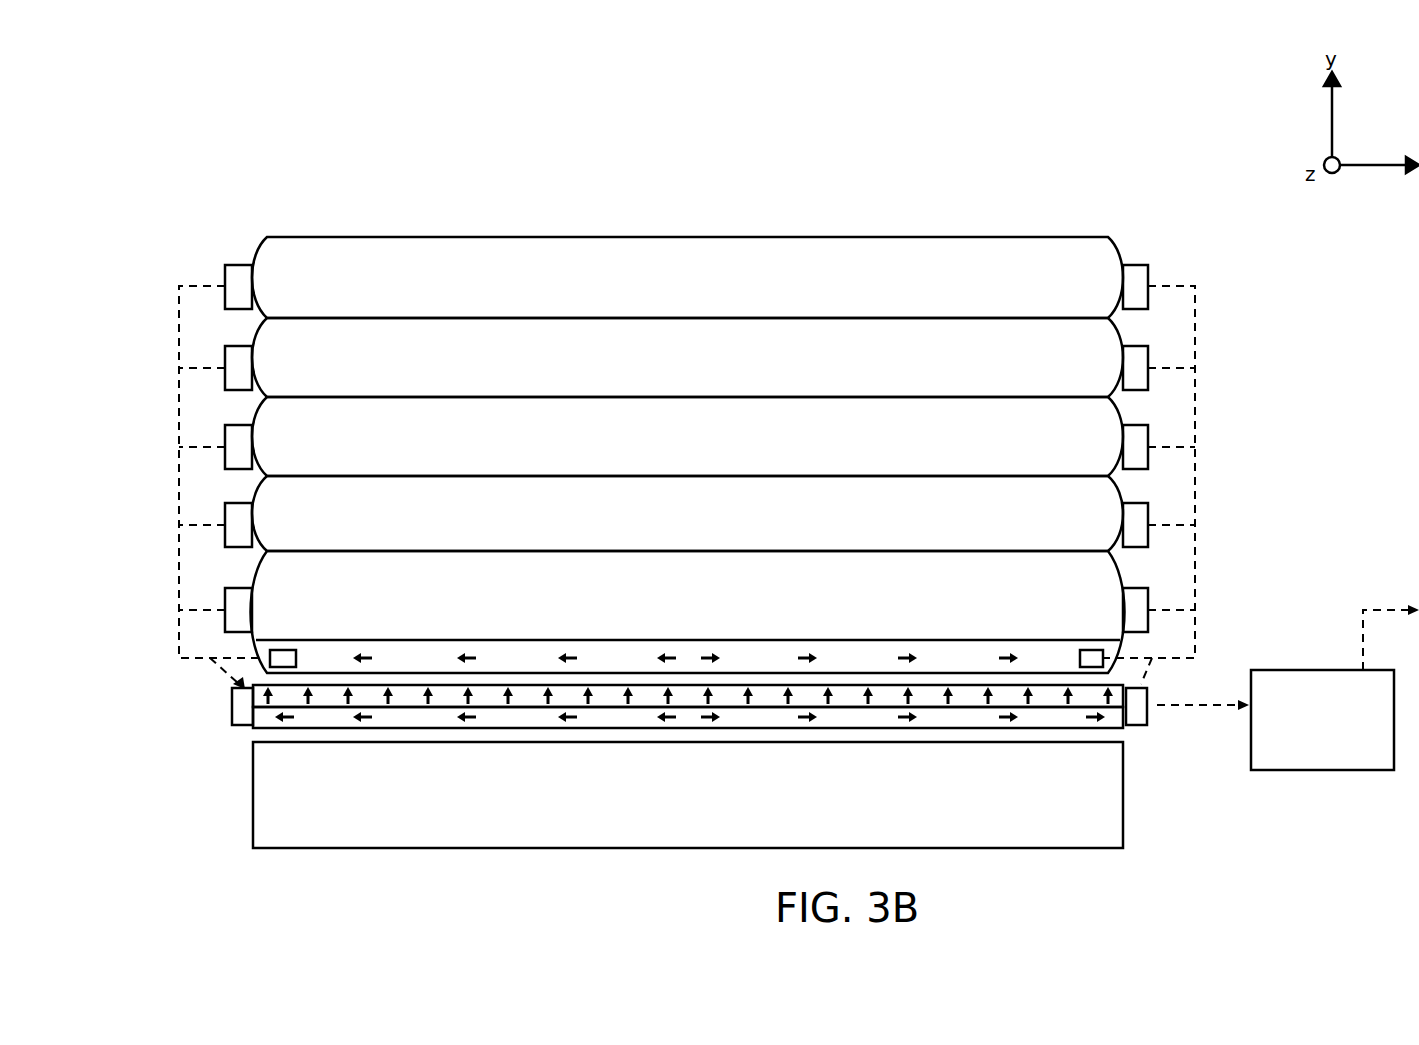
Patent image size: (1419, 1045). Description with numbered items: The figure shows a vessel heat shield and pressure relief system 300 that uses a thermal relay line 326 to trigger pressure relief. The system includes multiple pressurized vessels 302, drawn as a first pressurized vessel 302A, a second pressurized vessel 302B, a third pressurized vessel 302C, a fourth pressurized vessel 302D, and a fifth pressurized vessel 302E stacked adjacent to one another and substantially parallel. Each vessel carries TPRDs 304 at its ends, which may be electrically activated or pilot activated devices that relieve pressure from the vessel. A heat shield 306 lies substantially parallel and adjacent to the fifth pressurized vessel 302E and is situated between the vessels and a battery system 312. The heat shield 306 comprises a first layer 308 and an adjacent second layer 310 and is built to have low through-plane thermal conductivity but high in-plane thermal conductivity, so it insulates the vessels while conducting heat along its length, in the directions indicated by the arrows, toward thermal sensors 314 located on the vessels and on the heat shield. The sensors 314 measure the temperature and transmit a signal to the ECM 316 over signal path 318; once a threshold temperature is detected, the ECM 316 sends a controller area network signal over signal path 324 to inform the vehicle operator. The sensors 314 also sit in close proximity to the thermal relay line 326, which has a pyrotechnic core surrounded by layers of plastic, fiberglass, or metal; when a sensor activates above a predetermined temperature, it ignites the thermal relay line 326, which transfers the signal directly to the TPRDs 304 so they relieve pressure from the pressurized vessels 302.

The vessel heat shield and pressure relief system 300 is at (250, 116).
The pressurized vessels 302 is at (787, 227).
The first pressurized vessel 302A is at (598, 294).
The second pressurized vessel 302B is at (656, 367).
The third pressurized vessel 302C is at (608, 447).
The fourth pressurized vessel 302D is at (683, 525).
The fifth pressurized vessel 302E is at (617, 596).
The TPRD 304 is at (245, 276).
The heat shield 306 is at (1068, 716).
The first layer 308 is at (330, 715).
The second layer 310 is at (287, 693).
The battery system 312 is at (710, 807).
The thermal sensors 314 is at (287, 655).
The ECM 316 is at (1344, 735).
The signal path 318 is at (1187, 708).
The signal path 324 is at (1393, 611).
The thermal relay line 326 is at (178, 569).